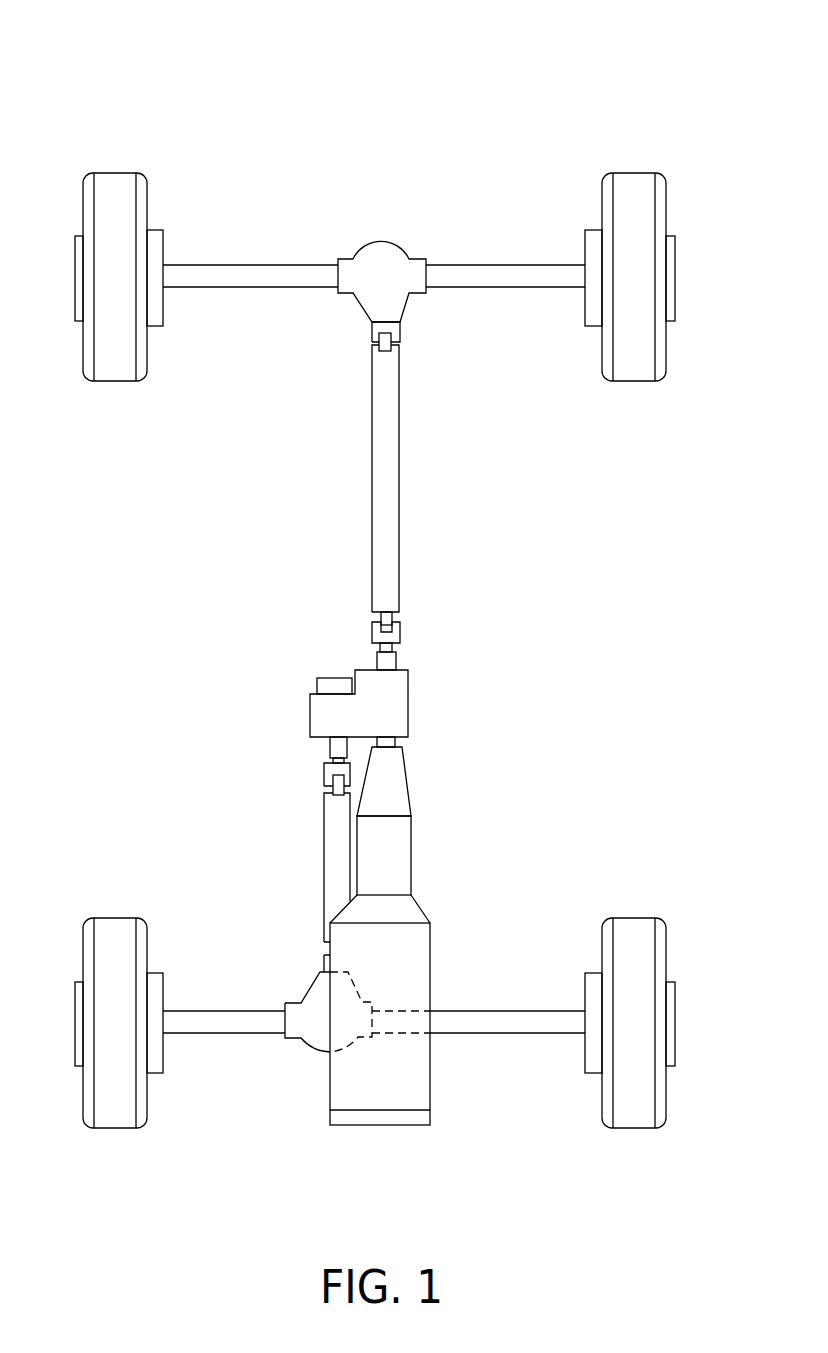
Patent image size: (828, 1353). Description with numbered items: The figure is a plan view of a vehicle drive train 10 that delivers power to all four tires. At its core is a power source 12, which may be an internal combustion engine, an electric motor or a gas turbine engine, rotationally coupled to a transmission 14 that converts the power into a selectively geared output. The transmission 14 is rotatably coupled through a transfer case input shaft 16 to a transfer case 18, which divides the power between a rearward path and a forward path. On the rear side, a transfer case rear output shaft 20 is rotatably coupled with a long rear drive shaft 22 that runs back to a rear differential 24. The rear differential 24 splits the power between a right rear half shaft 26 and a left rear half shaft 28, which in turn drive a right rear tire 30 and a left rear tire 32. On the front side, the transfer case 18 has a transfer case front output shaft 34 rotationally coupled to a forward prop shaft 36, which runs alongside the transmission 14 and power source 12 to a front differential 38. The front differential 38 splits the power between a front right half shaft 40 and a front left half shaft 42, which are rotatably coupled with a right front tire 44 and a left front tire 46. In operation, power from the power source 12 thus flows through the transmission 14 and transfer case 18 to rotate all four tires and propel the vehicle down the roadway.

The drive train 10 is at (513, 68).
The power source 12 is at (430, 1090).
The transmission 14 is at (411, 833).
The transfer case input shaft 16 is at (396, 742).
The transfer case 18 is at (310, 716).
The transfer case rear output shaft 20 is at (397, 660).
The rear drive shaft 22 is at (400, 478).
The rear differential 24 is at (382, 241).
The right rear half shaft 26 is at (250, 265).
The left rear half shaft 28 is at (505, 265).
The right rear tire 30 is at (115, 173).
The left rear tire 32 is at (635, 173).
The transfer case front output shaft 34 is at (330, 748).
The forward prop shaft 36 is at (324, 830).
The front differential 38 is at (312, 990).
The front right half shaft 40 is at (226, 1010).
The front left half shaft 42 is at (510, 1011).
The right front tire 44 is at (115, 918).
The left front tire 46 is at (634, 918).